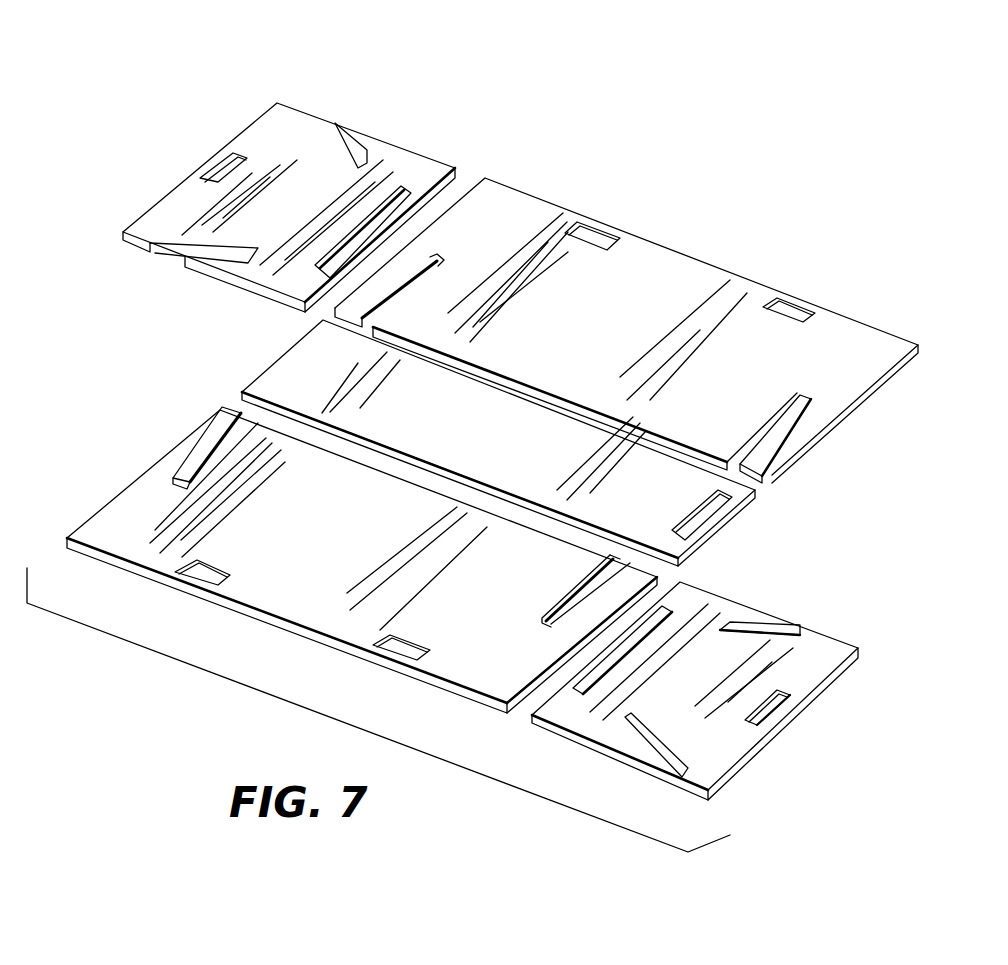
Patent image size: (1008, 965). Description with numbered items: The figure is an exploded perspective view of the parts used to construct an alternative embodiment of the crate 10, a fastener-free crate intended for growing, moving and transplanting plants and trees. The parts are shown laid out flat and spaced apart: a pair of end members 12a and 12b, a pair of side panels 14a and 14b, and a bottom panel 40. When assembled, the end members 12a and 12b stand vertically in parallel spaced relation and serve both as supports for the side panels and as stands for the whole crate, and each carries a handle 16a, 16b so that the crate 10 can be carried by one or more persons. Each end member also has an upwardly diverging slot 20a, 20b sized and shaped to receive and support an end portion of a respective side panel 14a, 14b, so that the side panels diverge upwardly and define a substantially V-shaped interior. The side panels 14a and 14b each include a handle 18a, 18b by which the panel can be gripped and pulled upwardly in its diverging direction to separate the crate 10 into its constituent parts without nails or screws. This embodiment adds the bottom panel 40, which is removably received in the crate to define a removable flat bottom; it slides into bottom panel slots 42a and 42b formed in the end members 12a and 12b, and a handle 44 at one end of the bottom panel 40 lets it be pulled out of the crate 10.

The crate apparatus 10 is at (247, 76).
The end member 12a is at (183, 210).
The end member 12b is at (588, 715).
The side panel 14a is at (333, 617).
The side panel 14b is at (700, 292).
The handle 16a is at (220, 175).
The handle 16b is at (772, 712).
The handle 18a is at (200, 578).
The handle 18b is at (594, 240).
The upwardly diverging slot 20a is at (197, 262).
The upwardly diverging slot 20b is at (348, 143).
The bottom panel 40 is at (310, 373).
The bottom panel slot 42a is at (368, 227).
The bottom panel slot 42b is at (597, 667).
The handle 44 is at (700, 518).